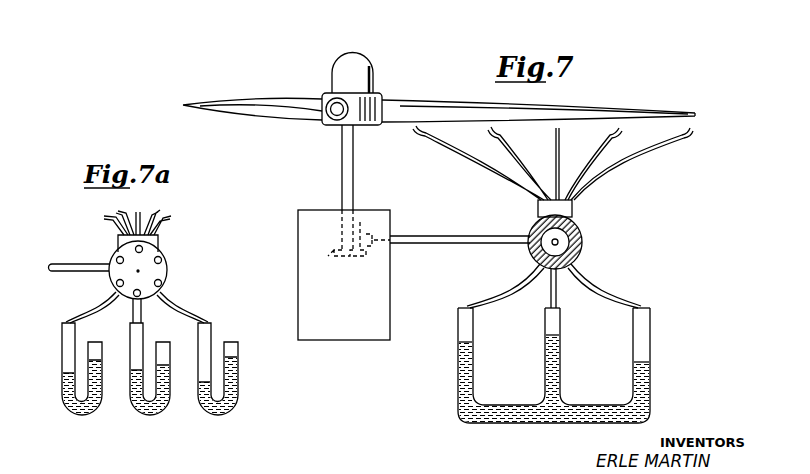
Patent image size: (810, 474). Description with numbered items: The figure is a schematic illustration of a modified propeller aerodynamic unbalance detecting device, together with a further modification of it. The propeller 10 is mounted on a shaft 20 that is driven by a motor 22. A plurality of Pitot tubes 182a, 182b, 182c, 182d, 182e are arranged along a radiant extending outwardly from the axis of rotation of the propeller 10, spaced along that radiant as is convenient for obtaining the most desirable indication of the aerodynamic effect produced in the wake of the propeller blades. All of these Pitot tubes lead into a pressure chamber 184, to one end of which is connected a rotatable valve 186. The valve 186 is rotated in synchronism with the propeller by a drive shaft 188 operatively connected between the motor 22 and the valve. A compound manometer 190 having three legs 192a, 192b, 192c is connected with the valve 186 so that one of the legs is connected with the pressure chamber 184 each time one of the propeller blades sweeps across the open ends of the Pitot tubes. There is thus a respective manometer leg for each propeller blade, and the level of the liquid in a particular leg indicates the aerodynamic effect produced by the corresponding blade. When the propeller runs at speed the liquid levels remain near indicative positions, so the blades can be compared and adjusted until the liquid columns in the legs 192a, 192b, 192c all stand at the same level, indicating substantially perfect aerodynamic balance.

In FIG. 7, the propeller 10 is at (378, 55).
In FIG. 7, the shaft 20 is at (340, 167).
In FIG. 7, the motor 22 is at (298, 293).
In FIG. 7, the Pitot tube 182a is at (452, 147).
In FIG. 7A, the Pitot tube 182a is at (109, 223).
In FIG. 7, the Pitot tube 182b is at (533, 143).
In FIG. 7A, the Pitot tube 182b is at (126, 216).
In FIG. 7, the Pitot tube 182c is at (560, 153).
In FIG. 7A, the Pitot tube 182c is at (141, 214).
In FIG. 7, the Pitot tube 182d is at (615, 141).
In FIG. 7A, the Pitot tube 182d is at (158, 218).
In FIG. 7, the Pitot tube 182e is at (672, 147).
In FIG. 7A, the Pitot tube 182e is at (166, 222).
In FIG. 7, the pressure chamber 184 is at (573, 208).
In FIG. 7, the rotatable valve 186 is at (583, 242).
In FIG. 7, the drive shaft 188 is at (486, 237).
In FIG. 7, the compound manometer 190 is at (527, 381).
In FIG. 7, the manometer leg 192a is at (458, 346).
In FIG. 7A, the manometer leg 192a is at (62, 352).
In FIG. 7, the manometer leg 192b is at (546, 343).
In FIG. 7A, the manometer leg 192b is at (130, 340).
In FIG. 7, the manometer leg 192c is at (634, 346).
In FIG. 7A, the manometer leg 192c is at (198, 342).